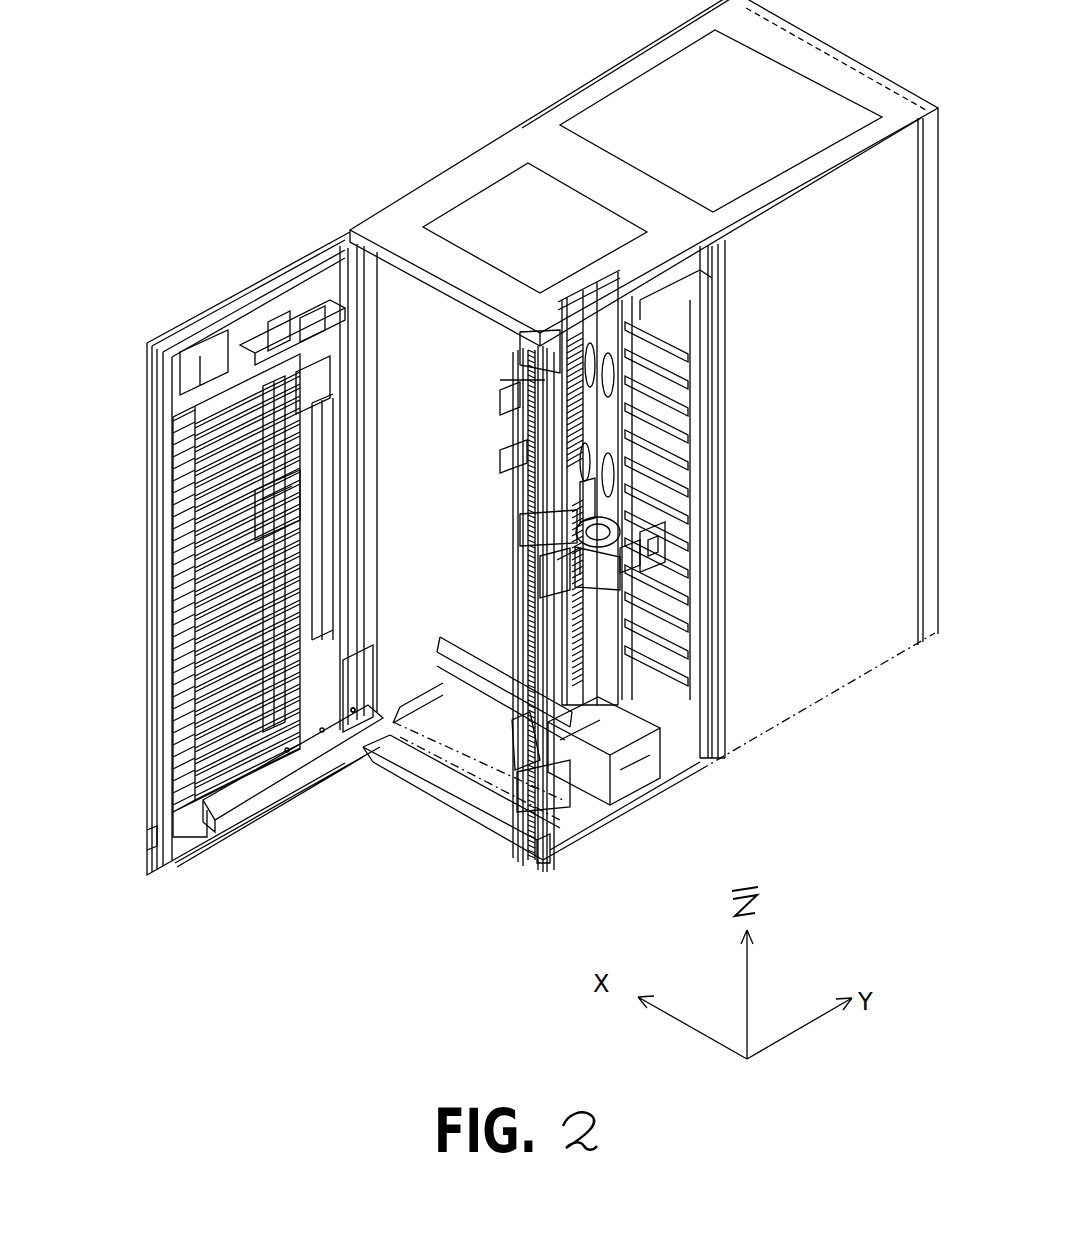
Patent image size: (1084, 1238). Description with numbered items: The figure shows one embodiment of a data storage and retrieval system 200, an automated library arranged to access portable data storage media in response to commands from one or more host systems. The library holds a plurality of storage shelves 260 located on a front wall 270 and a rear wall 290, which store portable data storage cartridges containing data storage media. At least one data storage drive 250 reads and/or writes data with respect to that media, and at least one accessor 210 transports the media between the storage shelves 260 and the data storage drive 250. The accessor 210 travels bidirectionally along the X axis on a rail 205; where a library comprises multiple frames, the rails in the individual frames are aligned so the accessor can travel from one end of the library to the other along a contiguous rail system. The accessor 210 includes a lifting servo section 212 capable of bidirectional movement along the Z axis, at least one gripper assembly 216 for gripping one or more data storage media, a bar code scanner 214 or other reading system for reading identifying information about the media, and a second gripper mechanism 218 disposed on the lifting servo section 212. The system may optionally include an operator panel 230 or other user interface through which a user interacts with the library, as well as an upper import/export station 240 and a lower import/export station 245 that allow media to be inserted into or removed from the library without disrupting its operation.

The data storage and retrieval system 200 is at (421, 890).
The rail 205 is at (380, 747).
The accessor 210 is at (581, 771).
The lifting servo section 212 is at (638, 541).
The bar code scanner 214 is at (580, 584).
The gripper assembly 216 is at (669, 551).
The second gripper mechanism 218 is at (652, 539).
The operator panel 230 is at (330, 354).
The upper import/export station 240 is at (316, 385).
The lower import/export station 245 is at (306, 585).
The data storage drive 250 is at (679, 327).
The storage shelves 260 is at (160, 685).
The front wall 270 is at (157, 528).
The rear wall 290 is at (535, 380).